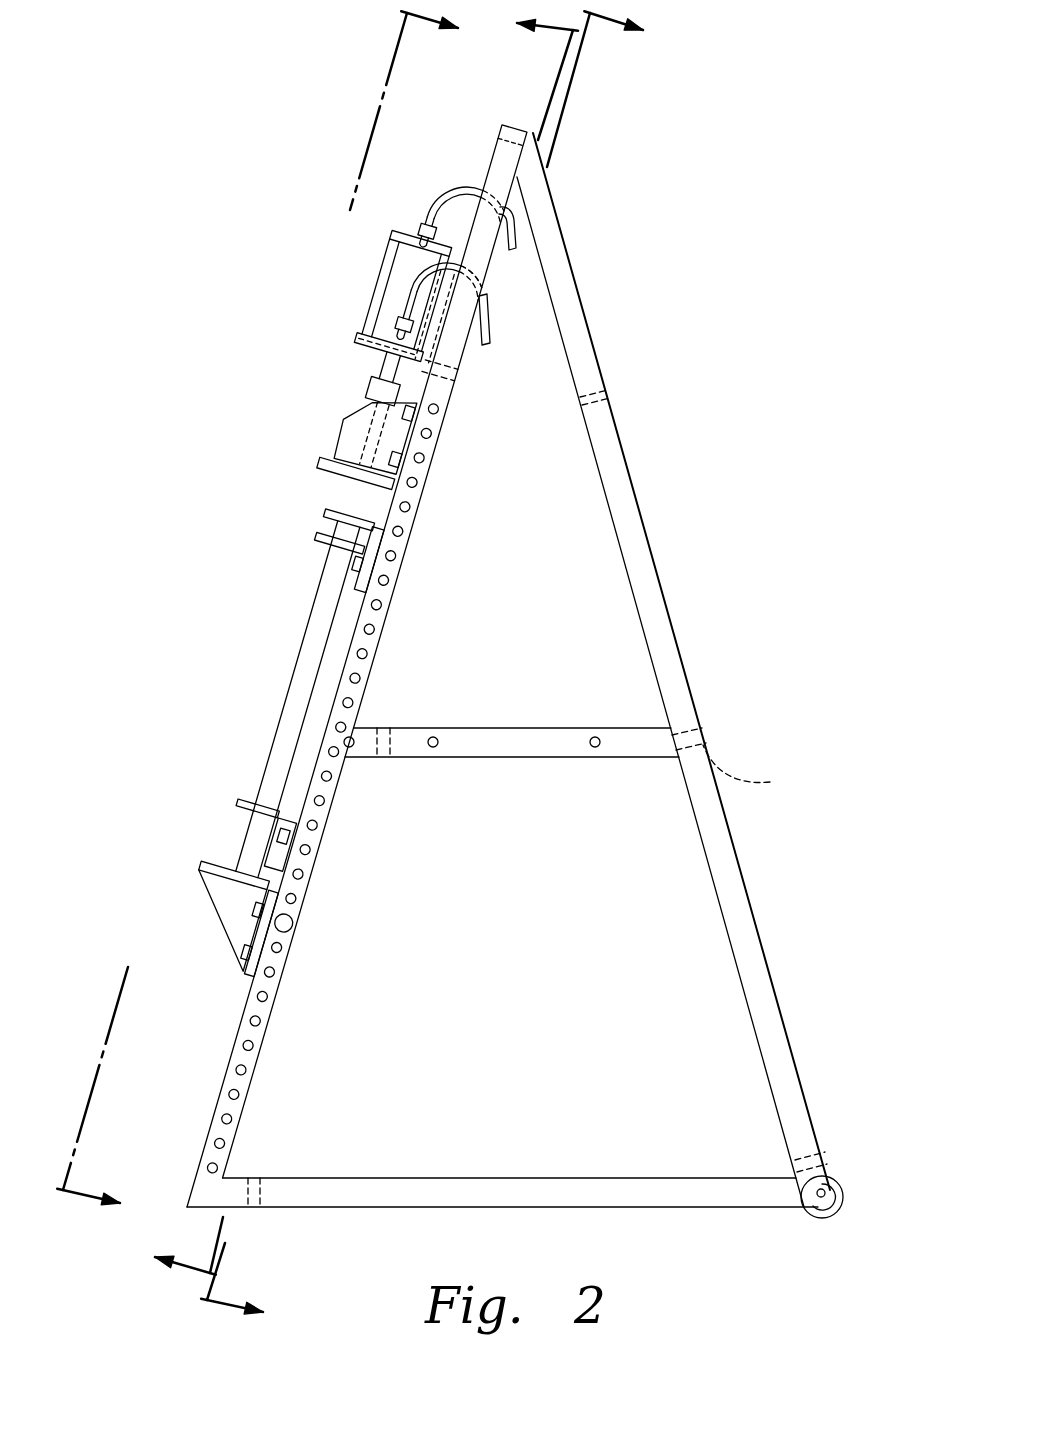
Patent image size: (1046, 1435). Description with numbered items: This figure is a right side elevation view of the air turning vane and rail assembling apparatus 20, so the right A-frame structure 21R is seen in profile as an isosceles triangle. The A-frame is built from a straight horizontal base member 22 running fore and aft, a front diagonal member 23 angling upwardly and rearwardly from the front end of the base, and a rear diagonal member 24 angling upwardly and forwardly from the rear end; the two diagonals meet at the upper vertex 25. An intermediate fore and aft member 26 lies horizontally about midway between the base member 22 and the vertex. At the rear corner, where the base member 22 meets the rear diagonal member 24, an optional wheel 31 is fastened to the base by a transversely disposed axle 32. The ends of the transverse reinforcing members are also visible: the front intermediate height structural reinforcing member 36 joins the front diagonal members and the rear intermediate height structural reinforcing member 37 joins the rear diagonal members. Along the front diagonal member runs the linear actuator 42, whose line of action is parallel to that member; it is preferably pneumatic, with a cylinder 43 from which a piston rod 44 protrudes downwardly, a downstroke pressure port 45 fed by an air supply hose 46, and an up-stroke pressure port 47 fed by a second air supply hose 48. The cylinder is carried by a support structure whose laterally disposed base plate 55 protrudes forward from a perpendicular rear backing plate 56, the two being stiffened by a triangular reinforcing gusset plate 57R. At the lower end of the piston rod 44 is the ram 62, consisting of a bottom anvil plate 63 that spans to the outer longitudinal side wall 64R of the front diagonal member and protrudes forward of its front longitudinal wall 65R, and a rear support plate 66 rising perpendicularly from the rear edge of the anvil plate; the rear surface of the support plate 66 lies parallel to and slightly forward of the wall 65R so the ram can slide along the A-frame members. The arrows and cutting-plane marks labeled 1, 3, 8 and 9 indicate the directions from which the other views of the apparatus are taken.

The air turning vane and rail assembling apparatus 20 is at (630, 240).
The right A-frame structure 21R is at (671, 537).
The base member 22 is at (681, 1207).
The front diagonal member 23 is at (222, 1085).
The rear diagonal member 24 is at (766, 962).
The upper vertex 25 is at (523, 125).
The intermediate fore and aft member 26 is at (548, 757).
The wheel 31 is at (842, 1205).
The axle 32 is at (826, 1191).
The front intermediate height structural reinforcing member 36 is at (345, 757).
The rear intermediate height structural reinforcing member 37 is at (770, 782).
The linear actuator 42 is at (300, 184).
The cylinder 43 is at (377, 298).
The piston rod 44 is at (377, 362).
The downstroke pressure port 45 is at (423, 228).
The downstroke air supply hose 46 is at (434, 200).
The up-stroke pressure port 47 is at (450, 265).
The up-stroke air supply hose 48 is at (485, 345).
The base plate 55 is at (427, 365).
The rear backing plate 56 is at (450, 302).
The right triangular reinforcing gusset plate 57R is at (427, 310).
The ram 62 is at (310, 427).
The anvil plate 63 is at (322, 470).
The right outer longitudinal side wall 64R is at (405, 573).
The right front longitudinal wall 65R is at (325, 512).
The rear support plate 66 is at (400, 465).
The section line 1 is at (268, 615).
The section line 3 is at (355, 642).
The section line 8 is at (431, 669).
The view indicator 9 is at (855, 1248).